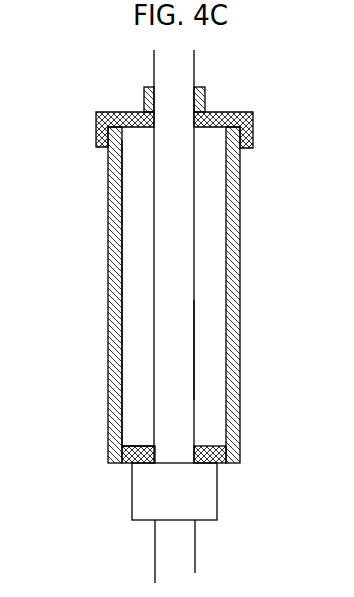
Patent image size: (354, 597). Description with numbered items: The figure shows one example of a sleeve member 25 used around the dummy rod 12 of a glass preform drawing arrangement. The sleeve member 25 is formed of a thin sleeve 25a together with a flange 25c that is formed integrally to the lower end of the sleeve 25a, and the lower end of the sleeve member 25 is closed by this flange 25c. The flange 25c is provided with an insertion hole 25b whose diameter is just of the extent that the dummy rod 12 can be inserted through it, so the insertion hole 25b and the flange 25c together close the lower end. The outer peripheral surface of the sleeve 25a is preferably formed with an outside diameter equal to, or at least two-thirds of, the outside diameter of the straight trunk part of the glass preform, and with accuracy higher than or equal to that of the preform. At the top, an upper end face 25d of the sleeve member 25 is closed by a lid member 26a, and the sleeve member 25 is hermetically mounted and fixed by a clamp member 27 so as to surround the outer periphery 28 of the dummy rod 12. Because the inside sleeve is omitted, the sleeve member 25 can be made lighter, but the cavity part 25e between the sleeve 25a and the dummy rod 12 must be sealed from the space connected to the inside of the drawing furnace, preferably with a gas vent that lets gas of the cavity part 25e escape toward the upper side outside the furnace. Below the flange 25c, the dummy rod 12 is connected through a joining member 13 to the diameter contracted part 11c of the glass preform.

The dummy rod 12 is at (183, 203).
The clamp member 27 is at (205, 100).
The sleeve member 25 is at (172, 304).
The sleeve 25a is at (108, 248).
The insertion hole 25b is at (157, 442).
The flange 25c is at (130, 462).
The upper end face 25d is at (100, 118).
The cavity part 25e is at (128, 316).
The lid member 26a is at (253, 118).
The outer periphery 28 is at (196, 353).
The joining member 13 is at (207, 492).
The diameter contracted part 11c is at (154, 545).